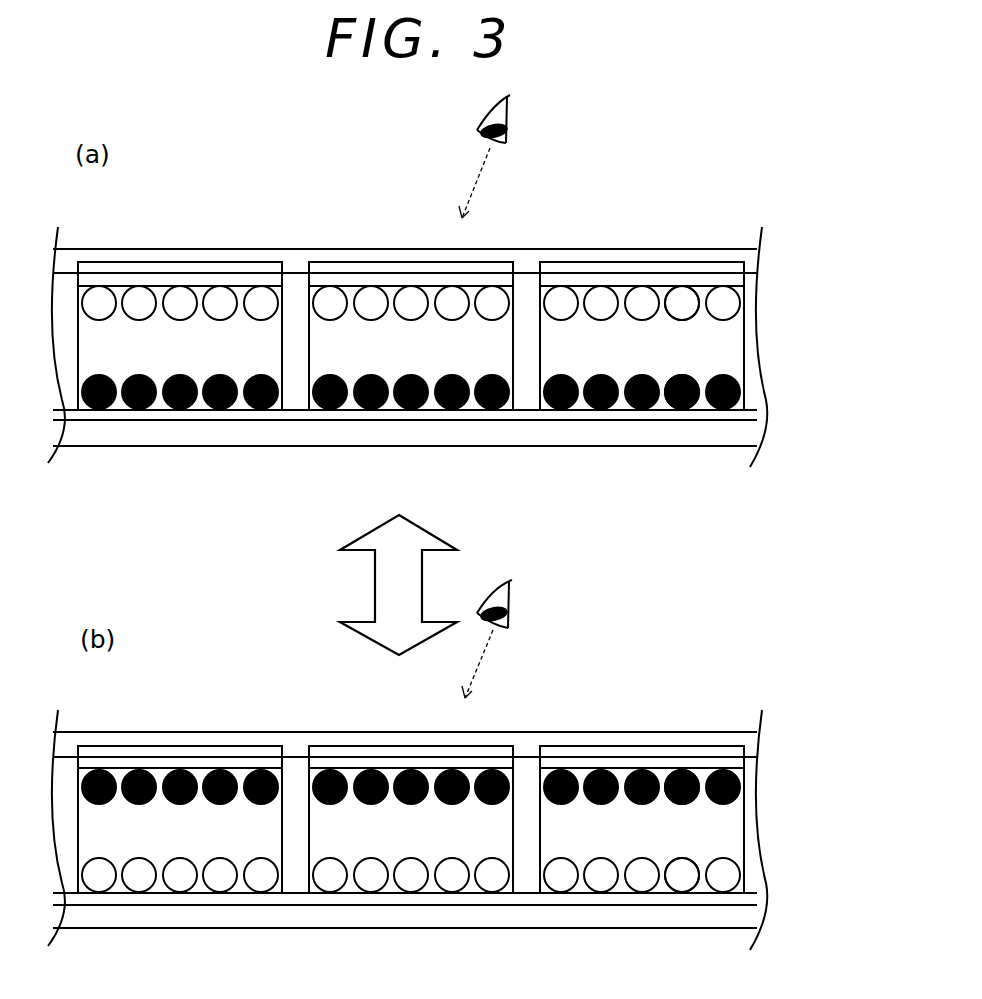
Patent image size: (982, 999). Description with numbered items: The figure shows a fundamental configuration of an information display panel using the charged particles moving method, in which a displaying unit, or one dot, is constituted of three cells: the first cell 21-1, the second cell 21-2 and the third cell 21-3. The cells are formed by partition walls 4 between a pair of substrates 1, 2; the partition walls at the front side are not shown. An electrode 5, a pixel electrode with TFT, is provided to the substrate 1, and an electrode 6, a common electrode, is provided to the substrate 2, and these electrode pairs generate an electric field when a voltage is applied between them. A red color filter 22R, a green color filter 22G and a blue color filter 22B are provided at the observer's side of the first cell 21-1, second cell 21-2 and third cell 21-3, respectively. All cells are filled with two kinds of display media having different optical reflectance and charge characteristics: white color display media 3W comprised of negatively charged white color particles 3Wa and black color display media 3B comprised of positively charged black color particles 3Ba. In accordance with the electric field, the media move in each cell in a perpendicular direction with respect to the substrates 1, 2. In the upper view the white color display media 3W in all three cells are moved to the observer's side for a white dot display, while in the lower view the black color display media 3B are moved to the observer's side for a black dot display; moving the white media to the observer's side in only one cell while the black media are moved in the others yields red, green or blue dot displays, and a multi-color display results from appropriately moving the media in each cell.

The substrate 1 is at (263, 433).
The substrate 2 is at (525, 258).
The partition walls 4 is at (72, 397).
The electrode 5 is at (468, 417).
The electrode 6 is at (240, 280).
The first cell 21-1 is at (147, 362).
The second cell 21-2 is at (378, 362).
The third cell 21-3 is at (609, 362).
The red color filter 22R is at (175, 270).
The green color filter 22G is at (390, 268).
The blue color filter 22B is at (638, 268).
The white color display media 3W is at (799, 287).
The black color display media 3B is at (799, 375).
The white color particles 3Wa is at (685, 298).
The black color particles 3Ba is at (688, 410).